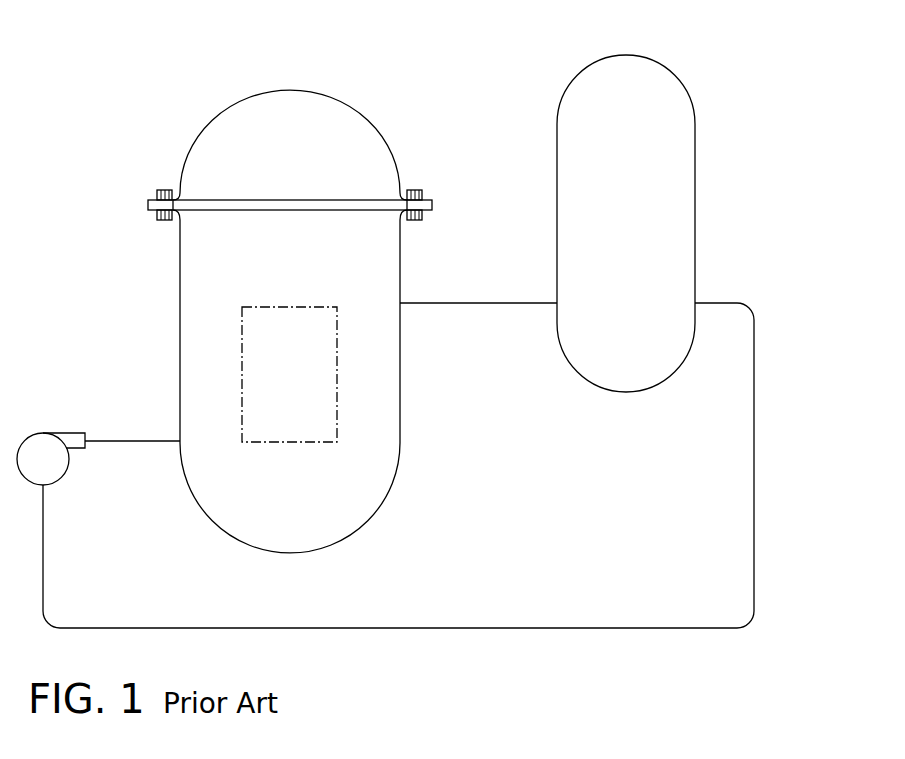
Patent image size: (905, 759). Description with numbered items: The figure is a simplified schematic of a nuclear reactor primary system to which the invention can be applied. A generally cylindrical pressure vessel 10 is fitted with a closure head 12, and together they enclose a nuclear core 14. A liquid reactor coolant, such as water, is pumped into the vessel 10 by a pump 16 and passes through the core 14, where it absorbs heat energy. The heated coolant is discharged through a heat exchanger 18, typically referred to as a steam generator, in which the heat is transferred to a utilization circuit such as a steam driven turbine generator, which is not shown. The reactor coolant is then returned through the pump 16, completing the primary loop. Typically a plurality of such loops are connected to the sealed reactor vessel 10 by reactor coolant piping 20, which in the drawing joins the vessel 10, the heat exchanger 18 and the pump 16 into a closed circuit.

The pressure vessel 10 is at (406, 375).
The closure head 12 is at (193, 147).
The nuclear core 14 is at (242, 362).
The pump 16 is at (40, 433).
The heat exchanger 18 is at (697, 162).
The reactor coolant piping 20 is at (755, 558).